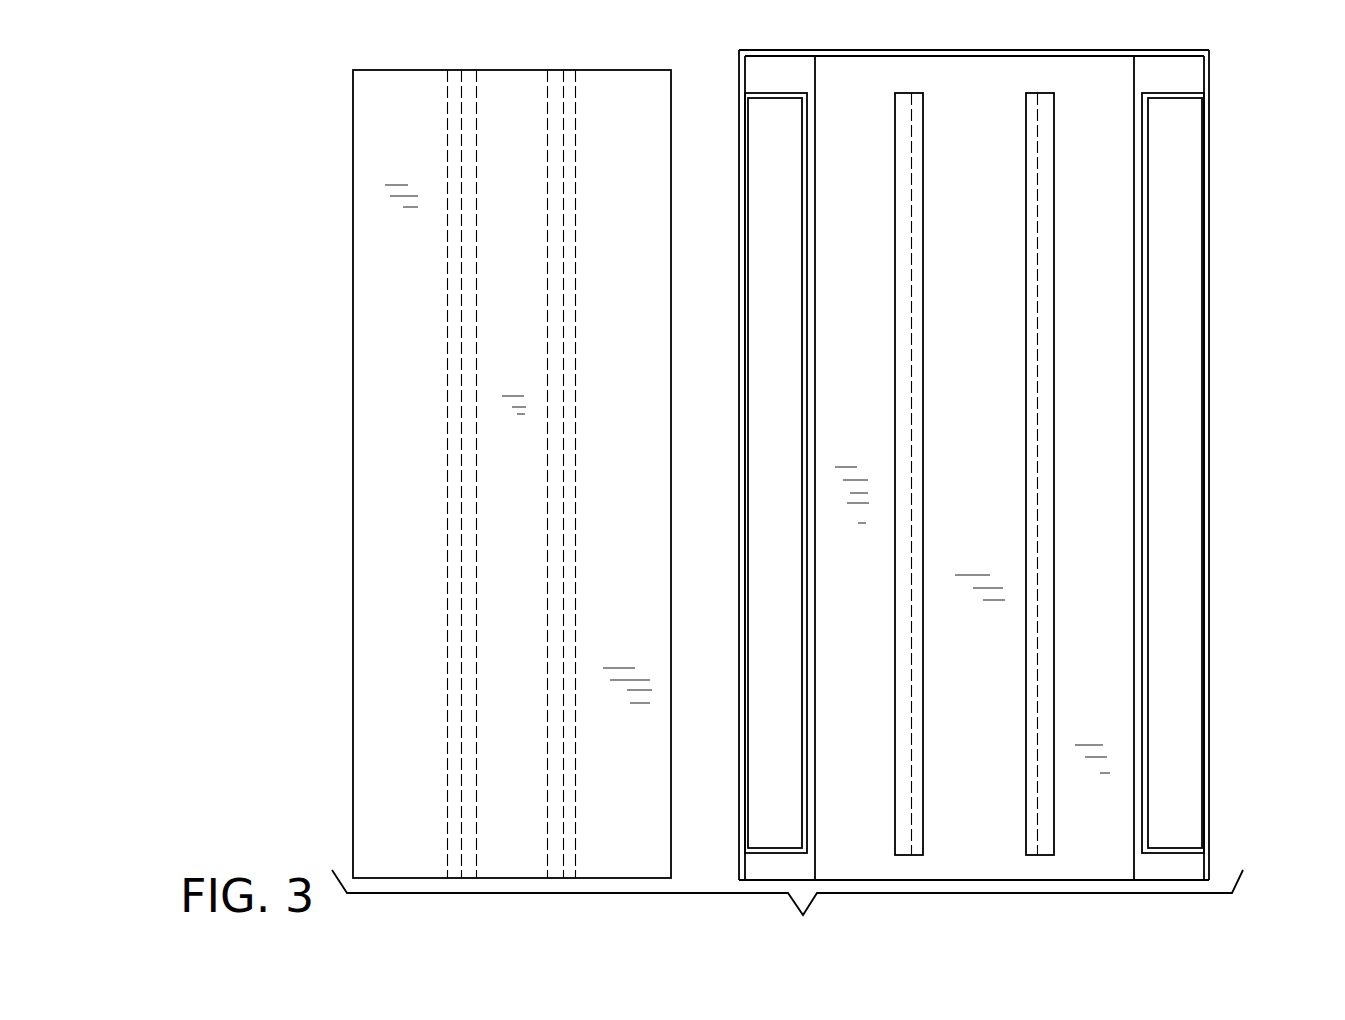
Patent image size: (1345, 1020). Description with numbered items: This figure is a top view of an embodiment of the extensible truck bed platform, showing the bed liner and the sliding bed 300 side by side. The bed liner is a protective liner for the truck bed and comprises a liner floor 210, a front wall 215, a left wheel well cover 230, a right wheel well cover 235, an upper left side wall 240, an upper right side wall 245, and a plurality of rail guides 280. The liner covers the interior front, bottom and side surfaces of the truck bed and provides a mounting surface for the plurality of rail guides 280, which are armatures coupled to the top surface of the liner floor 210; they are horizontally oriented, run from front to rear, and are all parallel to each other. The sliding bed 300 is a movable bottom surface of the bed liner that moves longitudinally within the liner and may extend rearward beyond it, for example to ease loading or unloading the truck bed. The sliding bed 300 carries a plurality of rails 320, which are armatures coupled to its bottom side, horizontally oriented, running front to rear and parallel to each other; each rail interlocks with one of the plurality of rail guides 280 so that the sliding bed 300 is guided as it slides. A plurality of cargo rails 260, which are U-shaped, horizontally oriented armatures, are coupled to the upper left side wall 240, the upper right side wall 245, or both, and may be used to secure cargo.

The sliding bed 300 is at (388, 246).
The plurality of rails 320 is at (562, 365).
The front wall 215 is at (1102, 50).
The upper left side wall 240 is at (738, 862).
The upper right side wall 245 is at (1210, 699).
The right wheel well cover 235 is at (1172, 865).
The left wheel well cover 230 is at (782, 862).
The plurality of cargo rails 260 is at (1145, 229).
The plurality of rail guides 280 is at (910, 455).
The liner floor 210 is at (973, 849).